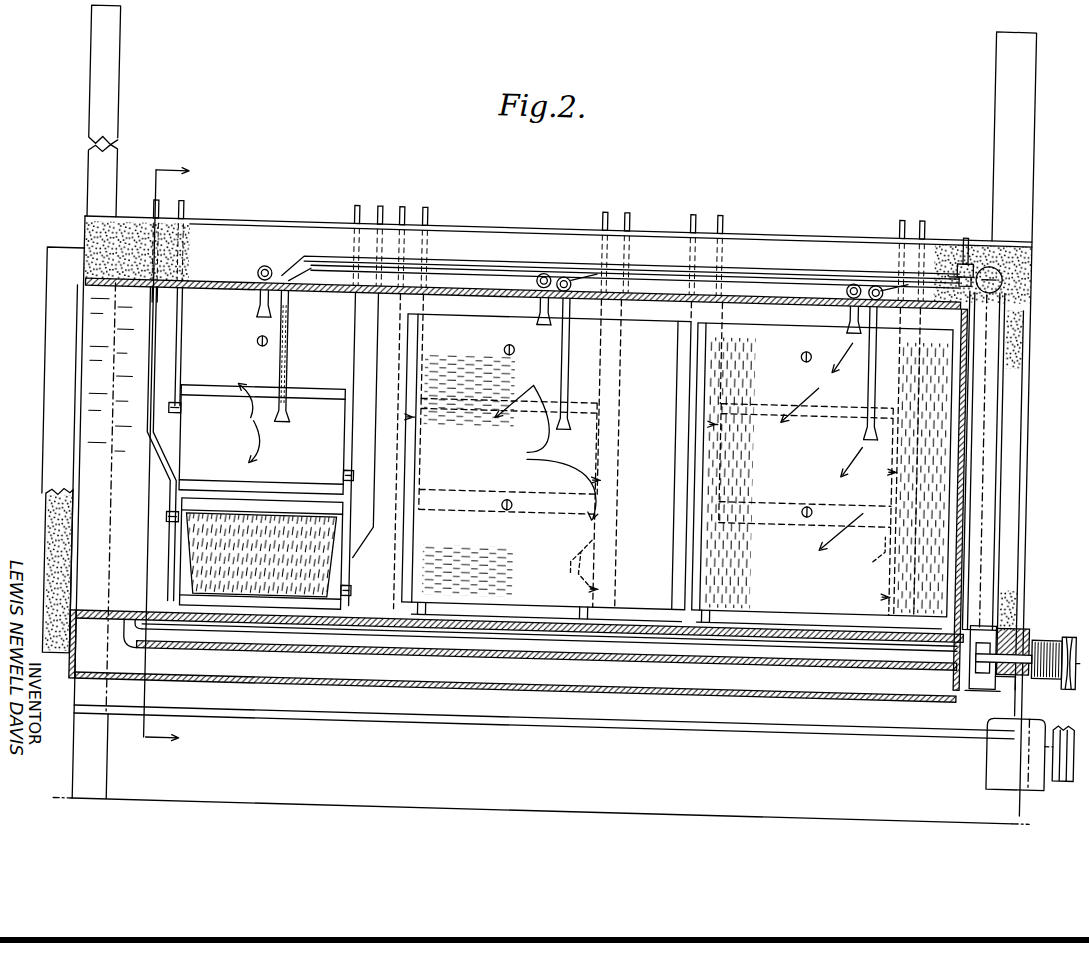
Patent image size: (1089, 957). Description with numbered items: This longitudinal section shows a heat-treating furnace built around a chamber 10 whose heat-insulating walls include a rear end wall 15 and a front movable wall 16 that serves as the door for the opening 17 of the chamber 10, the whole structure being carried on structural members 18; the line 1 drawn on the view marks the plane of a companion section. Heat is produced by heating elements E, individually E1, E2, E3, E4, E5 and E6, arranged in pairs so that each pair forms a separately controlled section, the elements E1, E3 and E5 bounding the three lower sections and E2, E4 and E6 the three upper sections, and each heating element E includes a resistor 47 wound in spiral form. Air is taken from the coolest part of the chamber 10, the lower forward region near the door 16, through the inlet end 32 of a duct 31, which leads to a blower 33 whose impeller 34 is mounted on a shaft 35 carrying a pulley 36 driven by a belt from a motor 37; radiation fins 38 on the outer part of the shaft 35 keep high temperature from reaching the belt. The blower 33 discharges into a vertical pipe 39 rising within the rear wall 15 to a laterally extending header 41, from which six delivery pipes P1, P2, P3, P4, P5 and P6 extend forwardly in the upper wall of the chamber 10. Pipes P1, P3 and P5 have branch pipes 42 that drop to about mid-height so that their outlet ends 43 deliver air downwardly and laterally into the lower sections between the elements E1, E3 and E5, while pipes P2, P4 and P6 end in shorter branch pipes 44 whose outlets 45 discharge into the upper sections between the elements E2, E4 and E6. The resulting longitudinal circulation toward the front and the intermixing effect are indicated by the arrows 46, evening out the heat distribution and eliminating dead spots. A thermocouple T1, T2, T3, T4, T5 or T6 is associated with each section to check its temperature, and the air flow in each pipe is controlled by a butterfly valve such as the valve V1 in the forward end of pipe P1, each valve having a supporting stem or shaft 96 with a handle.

The section line 1 is at (167, 453).
The chamber 10 is at (475, 294).
The rear end wall 15 is at (1036, 419).
The front movable wall 16 is at (85, 302).
The opening 17 is at (103, 435).
The structural member 18 is at (631, 698).
The duct 31 is at (395, 635).
The inlet end 32 is at (131, 619).
The blower 33 is at (985, 631).
The impeller 34 is at (998, 660).
The shaft 35 is at (1024, 625).
The pulley 36 is at (1074, 606).
The motor 37 is at (1056, 756).
The radiation fins 38 is at (1056, 655).
The vertical pipe 39 is at (1004, 325).
The header 41 is at (1005, 257).
The branch pipes 42 is at (294, 344).
The outlet ends 43 is at (288, 416).
The branch pipes 44 is at (260, 297).
The outlets 45 is at (265, 312).
The arrows 46 is at (545, 439).
The resistor 47 is at (362, 566).
The supporting stem 96 is at (966, 214).
The heating elements E is at (330, 373).
The heating element E1 is at (349, 534).
The heating element E2 is at (226, 449).
The heating element E3 is at (600, 543).
The heating element E4 is at (626, 413).
The heating element E5 is at (740, 560).
The heating element E6 is at (707, 462).
The delivery pipe P1 is at (301, 256).
The delivery pipe P2 is at (266, 257).
The delivery pipe P3 is at (572, 262).
The delivery pipe P4 is at (548, 261).
The delivery pipe P5 is at (878, 264).
The delivery pipe P6 is at (858, 263).
The thermocouple T1 is at (283, 515).
The thermocouple T2 is at (258, 340).
The thermocouple T3 is at (511, 498).
The thermocouple T4 is at (507, 336).
The thermocouple T5 is at (811, 487).
The thermocouple T6 is at (803, 336).
The butterfly valve V1 is at (953, 244).